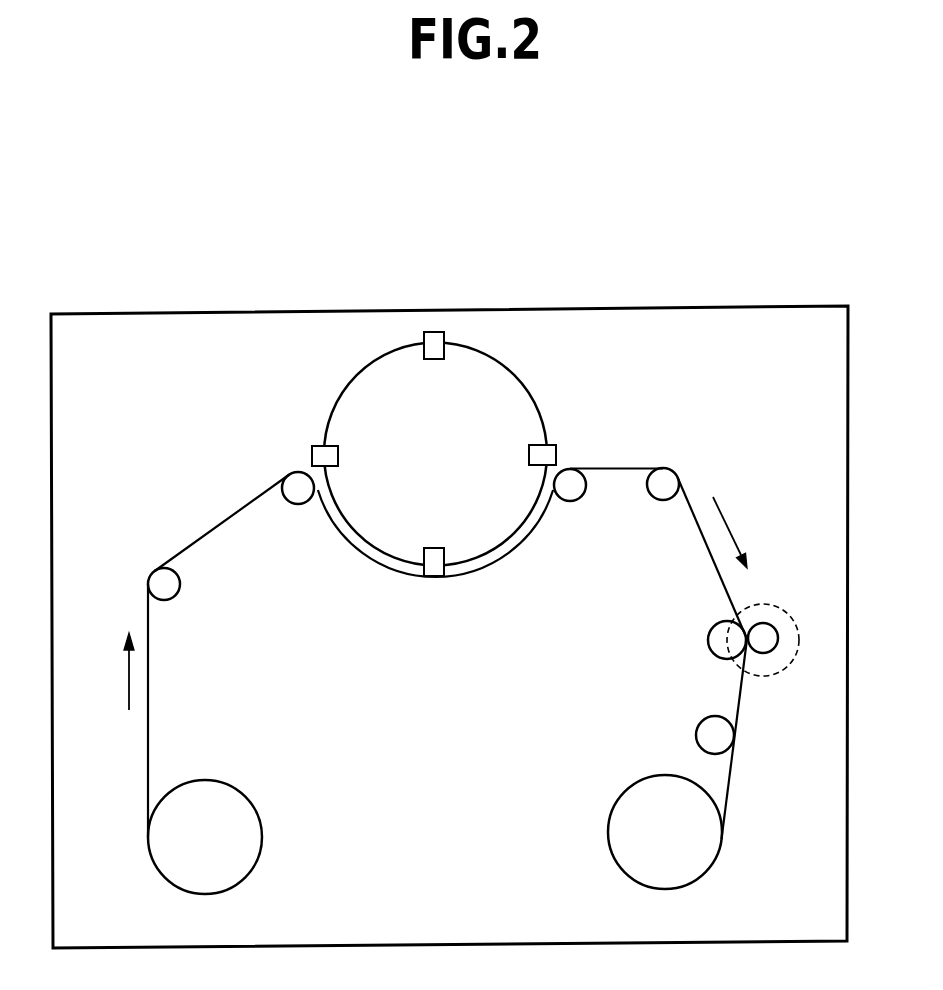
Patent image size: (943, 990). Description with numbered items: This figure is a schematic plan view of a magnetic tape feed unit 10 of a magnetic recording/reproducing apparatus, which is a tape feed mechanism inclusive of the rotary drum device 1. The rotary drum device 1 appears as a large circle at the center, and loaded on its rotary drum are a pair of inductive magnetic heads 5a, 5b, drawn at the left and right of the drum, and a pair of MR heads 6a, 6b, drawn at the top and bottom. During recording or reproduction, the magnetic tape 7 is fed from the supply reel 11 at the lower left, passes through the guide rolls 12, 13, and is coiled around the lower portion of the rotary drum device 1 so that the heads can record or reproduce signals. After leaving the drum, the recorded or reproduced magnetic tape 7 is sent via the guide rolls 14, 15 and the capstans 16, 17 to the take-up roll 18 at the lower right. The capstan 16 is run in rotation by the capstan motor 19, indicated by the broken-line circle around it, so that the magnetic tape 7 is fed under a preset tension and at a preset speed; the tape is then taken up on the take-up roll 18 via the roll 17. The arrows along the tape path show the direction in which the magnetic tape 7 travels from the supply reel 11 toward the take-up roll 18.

The rotary drum device 1 is at (556, 392).
The inductive magnetic head 5a is at (549, 447).
The inductive magnetic head 5b is at (315, 458).
The MR head 6a is at (438, 339).
The MR head 6b is at (437, 570).
The magnetic tape 7 is at (618, 468).
The magnetic tape feed unit 10 is at (624, 293).
The supply reel 11 is at (212, 792).
The guide roll 12 is at (168, 590).
The guide roll 13 is at (303, 493).
The guide roll 14 is at (571, 489).
The guide roll 15 is at (662, 489).
The capstan 16 is at (766, 636).
The capstan 17 is at (703, 727).
The take-up roll 18 is at (700, 860).
The capstan motor 19 is at (762, 678).